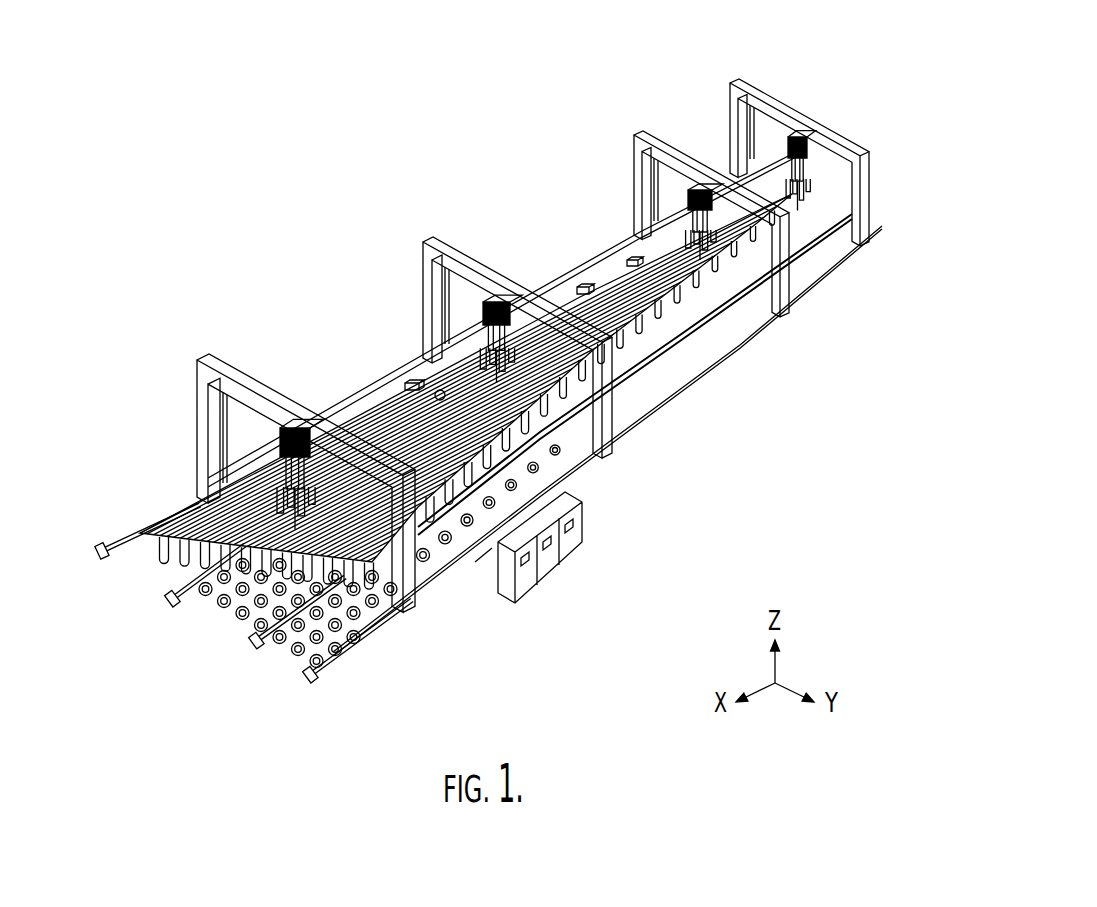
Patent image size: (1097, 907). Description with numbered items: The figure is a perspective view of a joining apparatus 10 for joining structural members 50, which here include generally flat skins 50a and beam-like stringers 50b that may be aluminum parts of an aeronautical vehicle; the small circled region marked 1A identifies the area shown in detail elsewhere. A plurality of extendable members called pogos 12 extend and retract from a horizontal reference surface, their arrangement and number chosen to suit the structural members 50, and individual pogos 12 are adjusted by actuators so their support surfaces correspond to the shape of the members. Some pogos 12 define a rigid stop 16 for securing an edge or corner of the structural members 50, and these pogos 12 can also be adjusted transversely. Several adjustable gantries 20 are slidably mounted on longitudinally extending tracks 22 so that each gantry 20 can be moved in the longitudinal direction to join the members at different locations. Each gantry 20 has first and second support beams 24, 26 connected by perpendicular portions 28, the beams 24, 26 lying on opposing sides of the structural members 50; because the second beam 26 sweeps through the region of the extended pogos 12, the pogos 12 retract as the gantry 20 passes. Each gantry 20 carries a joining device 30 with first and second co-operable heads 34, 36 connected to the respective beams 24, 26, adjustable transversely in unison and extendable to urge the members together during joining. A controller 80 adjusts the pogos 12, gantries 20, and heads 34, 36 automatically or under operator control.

The joining apparatus 10 is at (492, 375).
The pogos 12 is at (467, 439).
The stop 16 is at (591, 248).
The detail area 1A is at (400, 337).
The adjustable gantry 20 is at (493, 313).
The tracks 22 is at (236, 610).
The first support beam 24 is at (516, 252).
The second support beam 26 is at (614, 471).
The perpendicular portions 28 is at (508, 350).
The joining device 30 is at (528, 289).
The first head 34 is at (522, 264).
The second head 36 is at (528, 322).
The structural members 50 is at (455, 442).
The skins 50a is at (508, 602).
The stringers 50b is at (363, 363).
The controller 80 is at (579, 547).